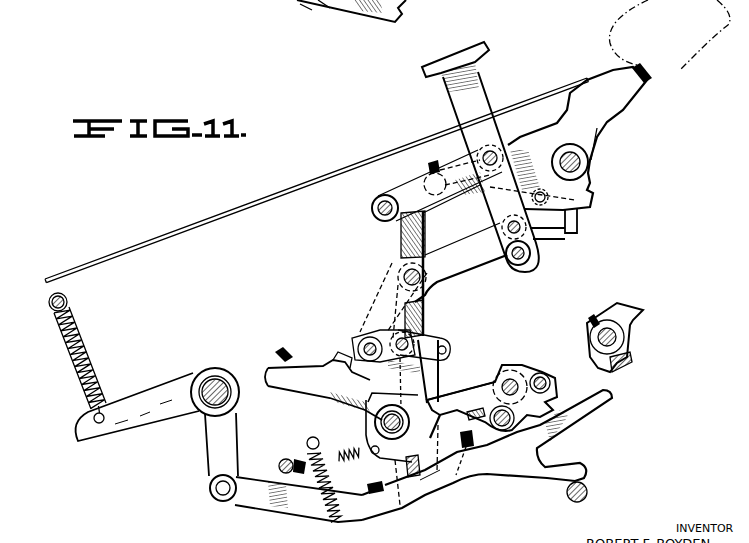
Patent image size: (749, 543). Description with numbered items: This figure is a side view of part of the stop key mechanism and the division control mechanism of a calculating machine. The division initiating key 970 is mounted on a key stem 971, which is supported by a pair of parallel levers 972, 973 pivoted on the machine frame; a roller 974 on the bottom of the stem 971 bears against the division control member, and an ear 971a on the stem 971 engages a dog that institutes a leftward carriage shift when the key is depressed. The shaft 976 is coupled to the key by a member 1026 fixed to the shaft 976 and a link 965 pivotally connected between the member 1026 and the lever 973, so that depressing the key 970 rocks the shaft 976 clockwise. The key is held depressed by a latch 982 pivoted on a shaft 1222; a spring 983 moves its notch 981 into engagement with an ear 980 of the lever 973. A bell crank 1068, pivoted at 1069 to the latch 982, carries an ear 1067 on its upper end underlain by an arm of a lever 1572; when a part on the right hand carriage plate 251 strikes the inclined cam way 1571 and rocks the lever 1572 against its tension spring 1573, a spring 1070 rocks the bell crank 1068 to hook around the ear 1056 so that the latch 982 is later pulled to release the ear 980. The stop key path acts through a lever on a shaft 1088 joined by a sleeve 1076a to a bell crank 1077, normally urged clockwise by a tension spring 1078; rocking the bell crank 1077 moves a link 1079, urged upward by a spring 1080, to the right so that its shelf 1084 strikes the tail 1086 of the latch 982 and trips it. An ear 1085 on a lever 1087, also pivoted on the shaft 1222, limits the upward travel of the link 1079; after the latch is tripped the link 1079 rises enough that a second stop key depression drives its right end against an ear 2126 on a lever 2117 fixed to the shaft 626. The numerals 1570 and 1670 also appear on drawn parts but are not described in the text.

The right hand carriage plate 251 is at (682, 17).
The shaft 626 is at (617, 335).
The link 965 is at (463, 378).
The division initiating key 970 is at (480, 61).
The key stem 971 is at (481, 100).
The ear 971a is at (580, 233).
The lever 972 is at (400, 192).
The lever 973 is at (453, 250).
The roller 974 is at (531, 264).
The shaft 976 is at (517, 374).
The ear 980 is at (356, 356).
The notch 981 is at (336, 363).
The latch 982 is at (347, 400).
The spring 983 is at (296, 462).
The member 1026 is at (498, 365).
The ear 1056 is at (275, 358).
The ear 1067 is at (432, 166).
The bell crank 1068 is at (402, 243).
The pivot 1069 is at (418, 333).
The spring 1070 is at (447, 365).
The sleeve 1076a is at (198, 408).
The bell crank 1077 is at (145, 390).
The tension spring 1078 is at (84, 342).
The link 1079 is at (295, 505).
The spring 1080 is at (313, 472).
The shelf 1084 is at (383, 487).
The ear 1085 is at (489, 458).
The tail 1086 is at (421, 480).
The lever 1087 is at (457, 476).
The shaft 1088 is at (214, 380).
The shaft 1222 is at (381, 423).
The lever 1570 is at (647, 92).
The inclined cam way 1571 is at (654, 75).
The lever 1572 is at (600, 127).
The tension spring 1573 is at (592, 181).
The lever 1670 is at (408, 2).
The lever 2117 is at (631, 302).
The ear 2126 is at (631, 362).